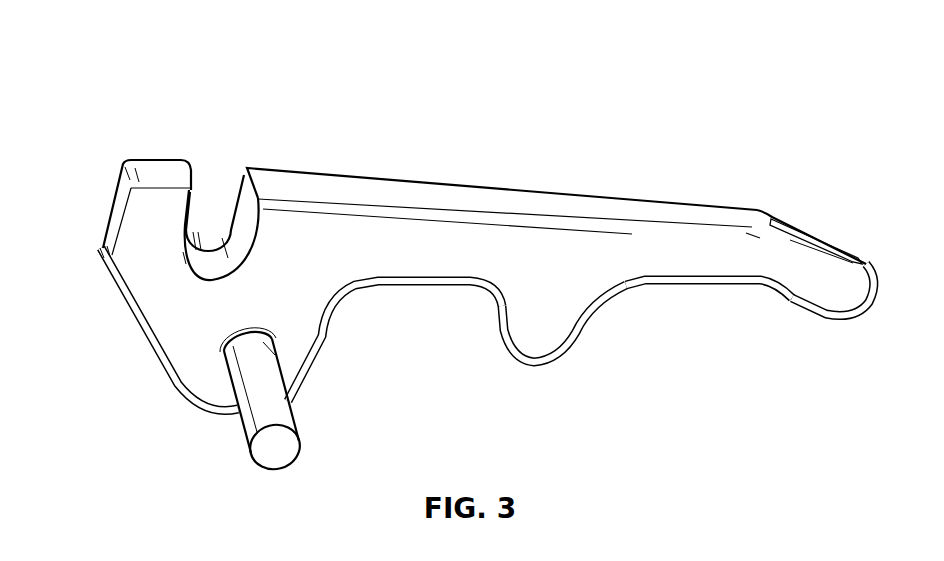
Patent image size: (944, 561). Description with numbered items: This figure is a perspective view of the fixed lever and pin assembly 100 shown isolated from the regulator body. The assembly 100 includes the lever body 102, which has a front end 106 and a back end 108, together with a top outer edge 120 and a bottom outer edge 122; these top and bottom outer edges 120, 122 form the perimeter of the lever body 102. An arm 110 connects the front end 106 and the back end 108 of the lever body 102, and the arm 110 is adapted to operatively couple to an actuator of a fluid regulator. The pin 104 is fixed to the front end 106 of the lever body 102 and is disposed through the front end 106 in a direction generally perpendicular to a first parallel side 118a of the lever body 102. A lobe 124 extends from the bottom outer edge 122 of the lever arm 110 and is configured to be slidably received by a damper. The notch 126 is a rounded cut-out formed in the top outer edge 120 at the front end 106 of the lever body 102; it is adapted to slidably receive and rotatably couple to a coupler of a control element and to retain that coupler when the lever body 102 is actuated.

The fixed lever and pin assembly 100 is at (464, 252).
The lever body 102 is at (462, 200).
The pin 104 is at (291, 414).
The front end 106 is at (110, 208).
The back end 108 is at (820, 240).
The arm 110 is at (450, 265).
The first parallel side 118a is at (375, 262).
The top outer edge 120 is at (622, 212).
The bottom outer edge 122 is at (667, 288).
The lobe 124 is at (543, 330).
The notch 126 is at (211, 200).